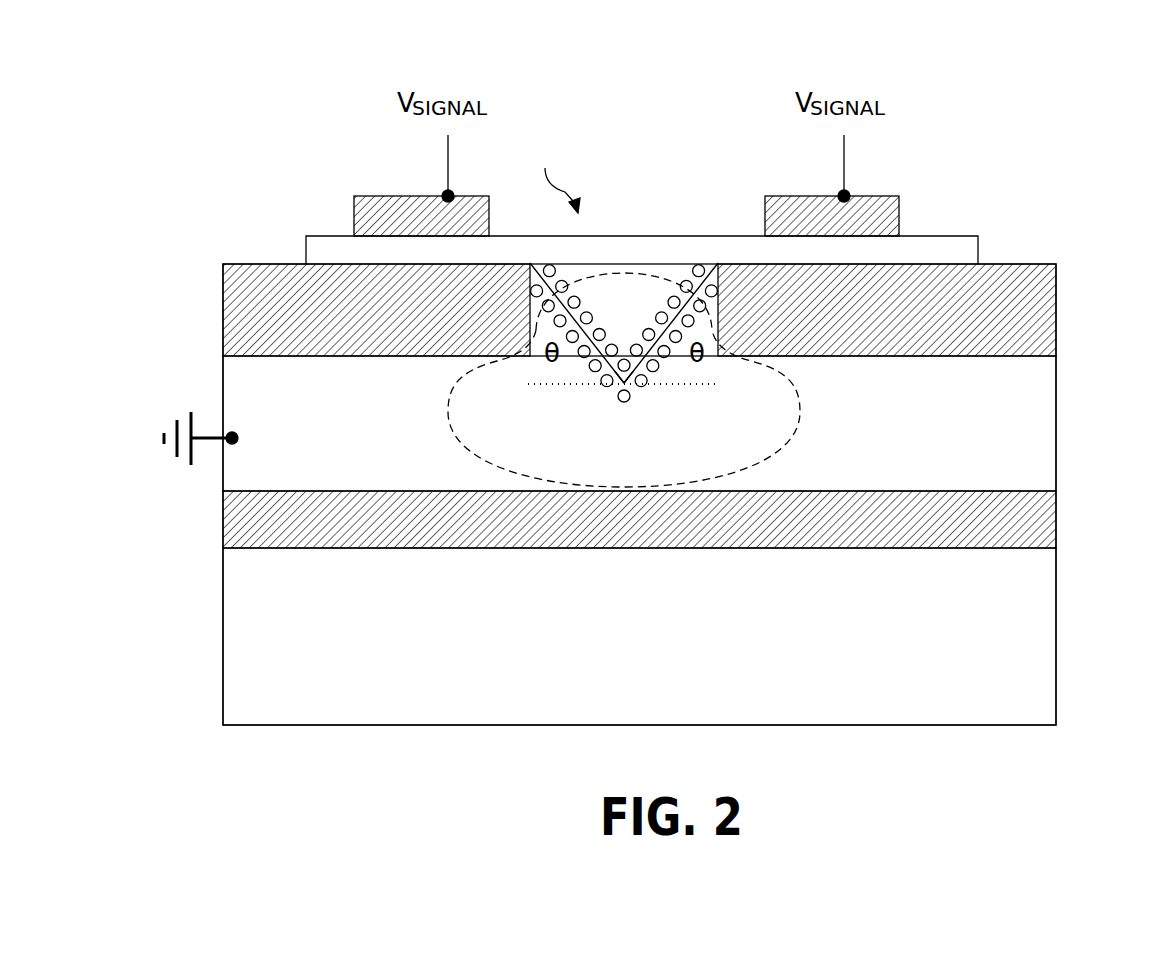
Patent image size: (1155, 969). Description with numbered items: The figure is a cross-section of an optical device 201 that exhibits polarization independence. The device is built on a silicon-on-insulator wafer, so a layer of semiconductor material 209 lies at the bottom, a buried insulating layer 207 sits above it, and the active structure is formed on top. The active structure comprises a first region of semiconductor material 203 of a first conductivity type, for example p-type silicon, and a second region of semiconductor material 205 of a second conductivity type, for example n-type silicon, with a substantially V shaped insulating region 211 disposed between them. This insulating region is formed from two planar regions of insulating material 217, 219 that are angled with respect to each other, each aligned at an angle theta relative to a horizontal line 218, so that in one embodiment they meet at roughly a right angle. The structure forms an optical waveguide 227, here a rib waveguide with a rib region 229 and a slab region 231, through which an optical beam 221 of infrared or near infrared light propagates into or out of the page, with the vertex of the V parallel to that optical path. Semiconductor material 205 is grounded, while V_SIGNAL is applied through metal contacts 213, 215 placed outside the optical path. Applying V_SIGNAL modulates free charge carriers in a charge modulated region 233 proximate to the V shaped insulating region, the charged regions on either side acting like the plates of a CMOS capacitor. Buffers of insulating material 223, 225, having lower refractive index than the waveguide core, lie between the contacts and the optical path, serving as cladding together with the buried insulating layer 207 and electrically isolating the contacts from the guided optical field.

The optical device 201 is at (1032, 51).
The first region of semiconductor material 203 is at (615, 248).
The second region of semiconductor material 205 is at (1045, 412).
The buried insulating layer 207 is at (1057, 505).
The layer of semiconductor material 209 is at (1045, 627).
The substantially V shaped insulating region 211 is at (613, 389).
The contact 213 is at (354, 197).
The contact 215 is at (937, 201).
The planar region of insulating material 217 is at (590, 365).
The horizontal line 218 is at (527, 383).
The planar region of insulating material 219 is at (647, 372).
The optical beam 221 is at (802, 432).
The buffer of insulating material 223 is at (223, 282).
The buffer of insulating material 225 is at (1090, 282).
The optical waveguide 227 is at (553, 176).
The rib region 229 is at (695, 266).
The slab region 231 is at (1005, 475).
The charge modulated region 233 is at (560, 280).